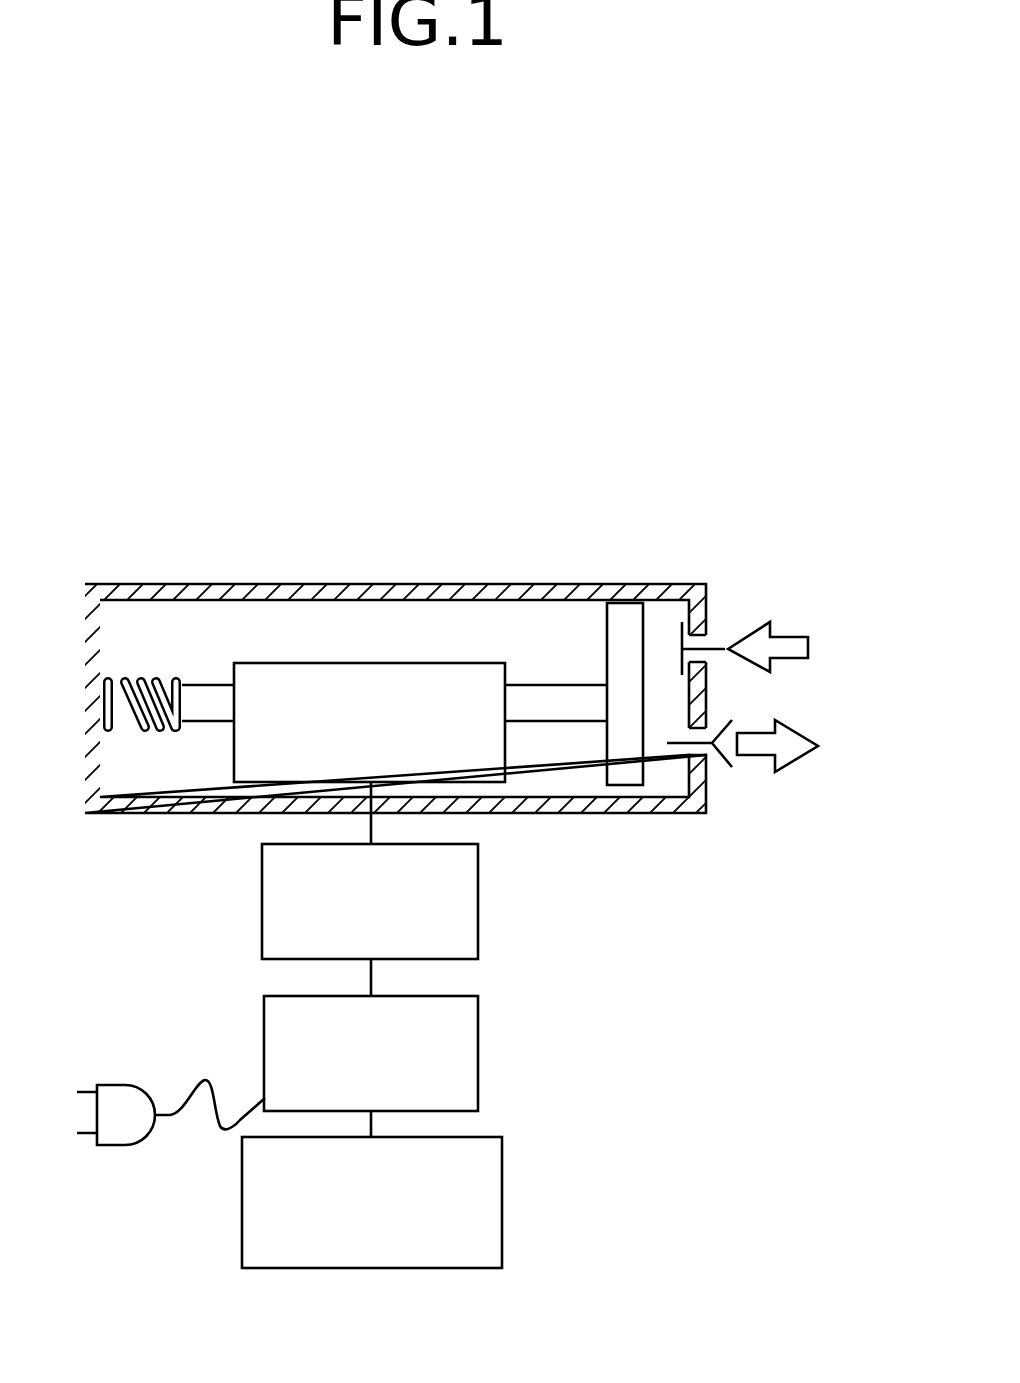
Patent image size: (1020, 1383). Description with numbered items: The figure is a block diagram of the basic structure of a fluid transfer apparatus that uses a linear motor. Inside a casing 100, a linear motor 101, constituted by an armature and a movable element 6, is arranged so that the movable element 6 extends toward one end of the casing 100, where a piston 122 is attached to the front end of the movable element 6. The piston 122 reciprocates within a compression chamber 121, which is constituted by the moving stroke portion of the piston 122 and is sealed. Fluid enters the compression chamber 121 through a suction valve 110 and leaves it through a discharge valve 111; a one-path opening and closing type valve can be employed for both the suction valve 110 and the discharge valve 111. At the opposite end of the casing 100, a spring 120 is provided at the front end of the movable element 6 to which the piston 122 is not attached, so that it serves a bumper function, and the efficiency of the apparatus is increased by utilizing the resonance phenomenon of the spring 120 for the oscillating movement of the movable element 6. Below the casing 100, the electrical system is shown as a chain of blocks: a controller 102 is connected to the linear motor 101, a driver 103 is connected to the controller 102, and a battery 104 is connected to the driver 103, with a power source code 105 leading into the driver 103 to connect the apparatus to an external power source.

The casing 100 is at (170, 585).
The linear motor 101 is at (466, 750).
The controller 102 is at (457, 947).
The driver 103 is at (457, 1069).
The battery 104 is at (485, 1201).
The power source code 105 is at (128, 1093).
The movable element 6 is at (557, 705).
The suction valve 110 is at (710, 648).
The discharge valve 111 is at (722, 770).
The spring 120 is at (126, 735).
The compression chamber 121 is at (665, 632).
The piston 122 is at (628, 630).